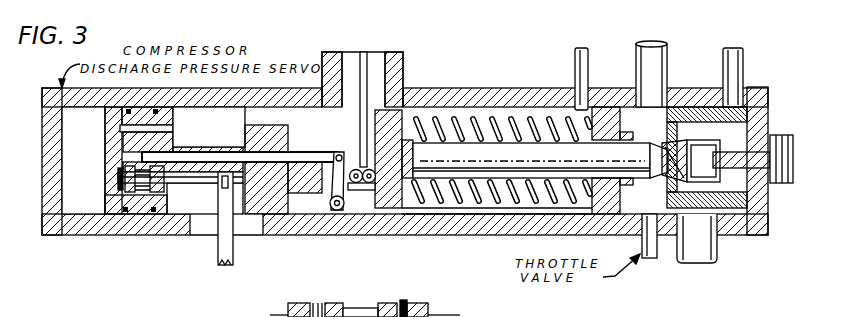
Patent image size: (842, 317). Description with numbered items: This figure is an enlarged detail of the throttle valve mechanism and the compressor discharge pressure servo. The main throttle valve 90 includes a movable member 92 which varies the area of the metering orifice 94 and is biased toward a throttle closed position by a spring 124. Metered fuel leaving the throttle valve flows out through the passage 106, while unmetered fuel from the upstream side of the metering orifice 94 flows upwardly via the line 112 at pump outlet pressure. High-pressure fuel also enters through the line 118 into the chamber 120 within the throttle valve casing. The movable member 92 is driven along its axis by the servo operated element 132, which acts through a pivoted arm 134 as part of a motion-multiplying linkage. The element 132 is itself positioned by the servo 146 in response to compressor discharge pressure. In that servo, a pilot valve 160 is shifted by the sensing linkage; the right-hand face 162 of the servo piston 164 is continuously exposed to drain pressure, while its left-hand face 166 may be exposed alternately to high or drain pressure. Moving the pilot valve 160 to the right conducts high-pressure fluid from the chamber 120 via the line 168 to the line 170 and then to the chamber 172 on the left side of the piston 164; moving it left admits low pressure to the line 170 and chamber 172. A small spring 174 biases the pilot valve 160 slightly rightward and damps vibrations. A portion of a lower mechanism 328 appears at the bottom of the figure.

The main throttle valve 90 is at (725, 248).
The movable member 92 is at (495, 160).
The metering orifice 94 is at (670, 186).
The passage 106 is at (663, 58).
The line 112 is at (743, 58).
The line 118 is at (575, 58).
The chamber 120 is at (460, 110).
The spring 124 is at (458, 203).
The servo operated element 132 is at (340, 137).
The pivoted arm 134 is at (353, 197).
The servo 146 is at (183, 250).
The pilot valve 160 is at (184, 181).
The right-hand face 162 is at (173, 134).
The servo piston 164 is at (173, 115).
The left-hand face 166 is at (106, 177).
The line 168 is at (305, 183).
The line 170 is at (143, 207).
The chamber 172 is at (90, 203).
The small spring 174 is at (122, 195).
The lower mechanism 328 is at (403, 303).